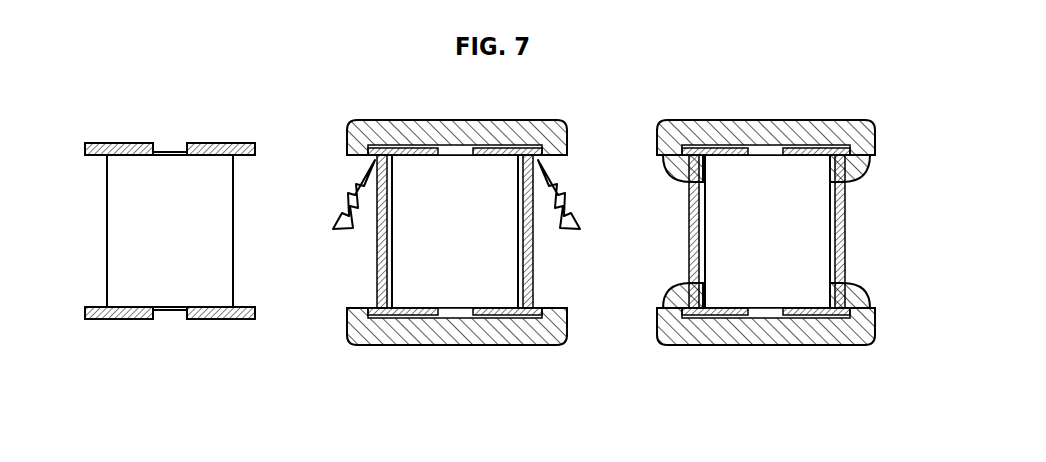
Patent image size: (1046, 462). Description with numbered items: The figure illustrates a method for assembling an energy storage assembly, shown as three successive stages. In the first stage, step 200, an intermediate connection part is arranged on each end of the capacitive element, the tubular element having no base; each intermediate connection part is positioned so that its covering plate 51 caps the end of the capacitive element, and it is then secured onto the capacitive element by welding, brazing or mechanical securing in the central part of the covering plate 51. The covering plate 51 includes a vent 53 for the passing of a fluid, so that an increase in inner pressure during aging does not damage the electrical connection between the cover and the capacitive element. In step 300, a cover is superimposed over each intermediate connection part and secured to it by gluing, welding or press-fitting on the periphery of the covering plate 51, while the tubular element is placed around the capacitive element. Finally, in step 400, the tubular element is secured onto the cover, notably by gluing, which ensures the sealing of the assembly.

The covering plate 51 is at (120, 319).
The vent 53 is at (170, 324).
The step of arranging the intermediate connection parts 200 is at (194, 287).
The step of superimposing the covers 300 is at (461, 254).
The step of securing the tubular element 400 is at (773, 254).